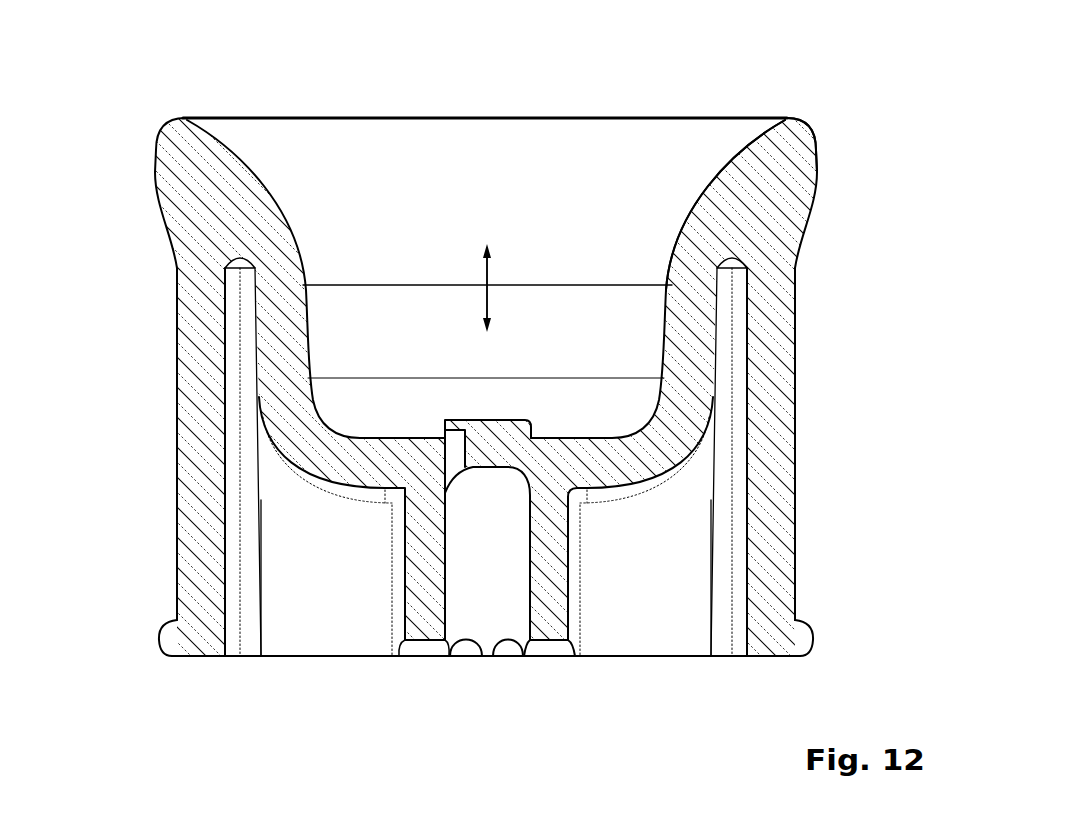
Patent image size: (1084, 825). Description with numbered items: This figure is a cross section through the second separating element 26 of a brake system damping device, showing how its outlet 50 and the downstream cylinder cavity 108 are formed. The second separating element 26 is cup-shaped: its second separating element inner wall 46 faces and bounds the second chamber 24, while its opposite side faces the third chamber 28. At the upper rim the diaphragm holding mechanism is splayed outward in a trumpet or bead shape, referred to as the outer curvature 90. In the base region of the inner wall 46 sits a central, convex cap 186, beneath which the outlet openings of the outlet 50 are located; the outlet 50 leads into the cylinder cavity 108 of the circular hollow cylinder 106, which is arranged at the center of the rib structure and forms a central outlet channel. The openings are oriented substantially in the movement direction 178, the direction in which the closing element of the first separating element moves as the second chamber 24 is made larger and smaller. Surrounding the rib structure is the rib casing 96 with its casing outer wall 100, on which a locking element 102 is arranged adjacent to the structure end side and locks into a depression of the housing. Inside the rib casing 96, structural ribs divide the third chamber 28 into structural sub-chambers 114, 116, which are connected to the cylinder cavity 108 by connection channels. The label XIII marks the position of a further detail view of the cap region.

The second separating element 26 is at (143, 172).
The outlet 50 is at (441, 367).
The second chamber 24 is at (520, 188).
The second separating element inner wall 46 is at (672, 193).
The outer curvature 90 is at (812, 166).
The movement direction 178 is at (492, 297).
The casing outer wall 100 is at (797, 308).
The cap 186 is at (465, 419).
The section indicator XIII is at (672, 452).
The rib casing 96 is at (778, 553).
The locking element 102 is at (173, 640).
The structural sub-chamber 114 is at (316, 615).
The third chamber 28 is at (363, 627).
The cylinder cavity 108 is at (487, 620).
The circular hollow cylinder 106 is at (557, 613).
The structural sub-chamber 116 is at (603, 610).